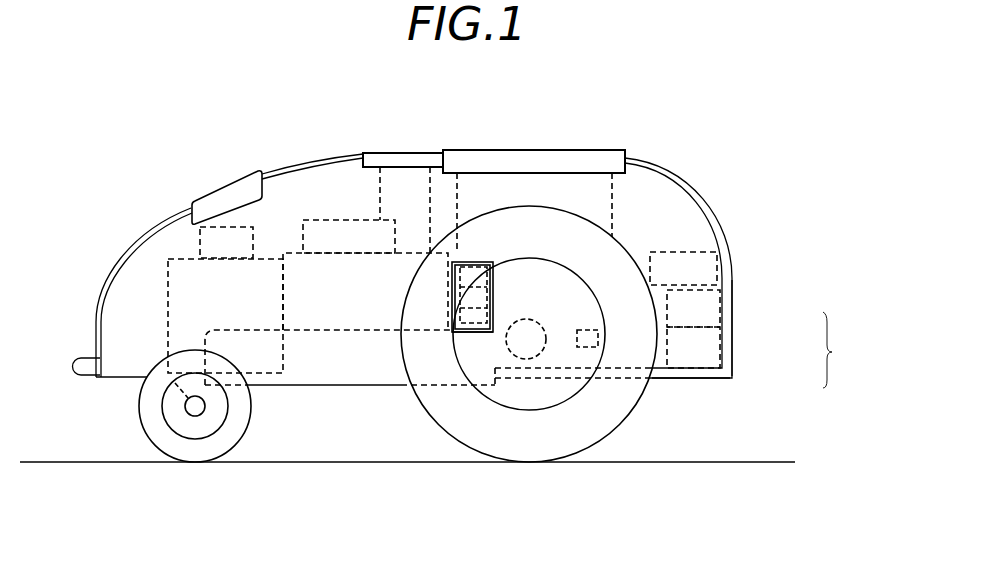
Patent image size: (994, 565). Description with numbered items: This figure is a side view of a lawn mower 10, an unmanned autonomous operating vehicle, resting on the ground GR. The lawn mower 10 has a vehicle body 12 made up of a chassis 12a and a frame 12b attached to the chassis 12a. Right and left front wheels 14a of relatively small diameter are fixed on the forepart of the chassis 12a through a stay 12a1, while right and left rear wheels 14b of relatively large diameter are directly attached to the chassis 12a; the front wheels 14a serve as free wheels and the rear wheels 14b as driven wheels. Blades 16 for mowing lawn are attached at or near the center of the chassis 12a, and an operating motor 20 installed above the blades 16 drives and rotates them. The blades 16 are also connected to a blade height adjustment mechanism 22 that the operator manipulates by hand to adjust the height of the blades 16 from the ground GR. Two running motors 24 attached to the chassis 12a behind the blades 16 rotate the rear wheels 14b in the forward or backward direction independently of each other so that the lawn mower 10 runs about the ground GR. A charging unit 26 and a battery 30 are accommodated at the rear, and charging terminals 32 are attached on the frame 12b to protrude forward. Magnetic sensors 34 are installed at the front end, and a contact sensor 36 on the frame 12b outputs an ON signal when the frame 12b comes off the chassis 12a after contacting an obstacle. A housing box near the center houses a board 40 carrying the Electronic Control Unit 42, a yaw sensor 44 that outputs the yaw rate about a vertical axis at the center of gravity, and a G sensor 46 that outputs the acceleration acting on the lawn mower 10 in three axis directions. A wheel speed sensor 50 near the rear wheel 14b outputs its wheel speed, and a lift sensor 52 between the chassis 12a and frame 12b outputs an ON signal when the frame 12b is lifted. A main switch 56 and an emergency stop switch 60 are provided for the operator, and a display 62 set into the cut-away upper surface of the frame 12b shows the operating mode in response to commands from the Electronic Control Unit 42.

The lawn mower 10 is at (676, 164).
The vehicle body 12 is at (842, 350).
The chassis 12a is at (730, 358).
The stay 12a1 is at (183, 402).
The frame 12b is at (730, 262).
The front wheels 14a is at (143, 437).
The rear wheels 14b is at (427, 413).
The blades 16 is at (300, 364).
The operating motor 20 is at (324, 302).
The blade height adjustment mechanism 22 is at (334, 247).
The running motors 24 is at (528, 320).
The charging unit 26 is at (680, 318).
The battery 30 is at (680, 359).
The charging terminals 32 is at (87, 357).
The magnetic sensors 34 is at (233, 183).
The contact sensor 36 is at (212, 254).
The board 40 is at (490, 275).
The Electronic Control Unit 42 is at (449, 262).
The yaw sensor 44 is at (458, 312).
The G sensor 46 is at (460, 332).
The wheel speed sensor 50 is at (590, 329).
The lift sensor 52 is at (671, 279).
The main switch 56 is at (403, 151).
The emergency stop switch 60 is at (403, 160).
The display 62 is at (533, 150).
The ground GR is at (665, 462).